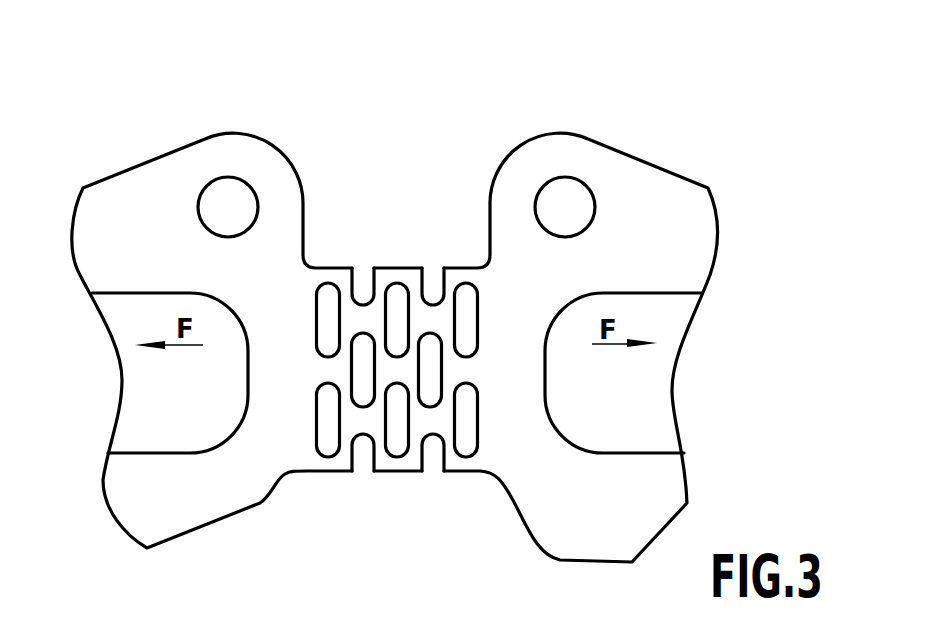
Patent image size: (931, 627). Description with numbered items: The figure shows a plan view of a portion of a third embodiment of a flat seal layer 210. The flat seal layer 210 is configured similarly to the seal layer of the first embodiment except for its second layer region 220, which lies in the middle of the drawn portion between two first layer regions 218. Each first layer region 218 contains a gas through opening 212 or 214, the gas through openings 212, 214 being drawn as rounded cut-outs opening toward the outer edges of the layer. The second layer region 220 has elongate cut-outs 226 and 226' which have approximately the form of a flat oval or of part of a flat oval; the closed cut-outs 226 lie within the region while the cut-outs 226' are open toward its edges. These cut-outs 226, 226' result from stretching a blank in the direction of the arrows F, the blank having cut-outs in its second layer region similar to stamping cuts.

The flat seal layer 210 is at (262, 135).
The gas through opening 212 is at (148, 452).
The gas through opening 214 is at (633, 452).
The first layer region 218 is at (203, 500).
The second layer region 220 is at (390, 267).
The elongate cut-out 226 is at (505, 308).
The elongate cut-out 226' is at (418, 334).